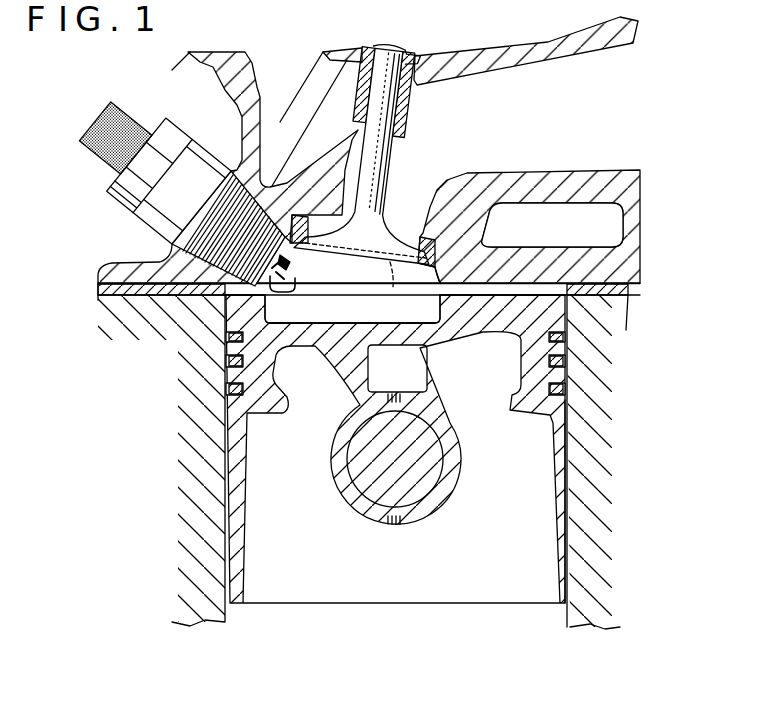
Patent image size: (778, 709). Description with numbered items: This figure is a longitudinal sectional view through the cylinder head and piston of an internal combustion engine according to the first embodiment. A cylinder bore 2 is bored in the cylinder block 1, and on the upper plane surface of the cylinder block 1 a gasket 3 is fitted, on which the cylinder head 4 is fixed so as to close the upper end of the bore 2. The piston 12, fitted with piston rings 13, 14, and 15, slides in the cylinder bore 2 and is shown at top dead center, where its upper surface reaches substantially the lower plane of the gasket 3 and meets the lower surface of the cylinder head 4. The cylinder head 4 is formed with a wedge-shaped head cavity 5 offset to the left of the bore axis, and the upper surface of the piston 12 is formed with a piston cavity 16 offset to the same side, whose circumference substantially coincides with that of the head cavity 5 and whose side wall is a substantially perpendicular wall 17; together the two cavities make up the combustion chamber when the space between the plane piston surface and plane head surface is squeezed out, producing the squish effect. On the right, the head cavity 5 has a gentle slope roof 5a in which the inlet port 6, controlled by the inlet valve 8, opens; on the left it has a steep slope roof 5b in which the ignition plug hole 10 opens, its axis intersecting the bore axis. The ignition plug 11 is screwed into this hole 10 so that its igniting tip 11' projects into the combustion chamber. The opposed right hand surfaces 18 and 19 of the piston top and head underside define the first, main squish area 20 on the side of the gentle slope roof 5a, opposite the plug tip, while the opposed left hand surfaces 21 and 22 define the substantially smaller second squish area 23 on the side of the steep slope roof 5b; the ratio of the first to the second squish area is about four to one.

The cylinder block 1 is at (573, 437).
The cylinder bore 2 is at (565, 524).
The gasket 3 is at (612, 292).
The cylinder head 4 is at (550, 270).
The head cavity 5 is at (380, 270).
The gentle slope roof 5a is at (352, 307).
The steep slope roof 5b is at (317, 273).
The inlet port 6 is at (416, 244).
The inlet valve 8 is at (381, 186).
The ignition plug hole 10 is at (217, 238).
The ignition plug 11 is at (155, 173).
The igniting tip 11' is at (307, 268).
The piston 12 is at (563, 486).
The piston ring 13 is at (568, 340).
The piston ring 14 is at (567, 363).
The piston ring 15 is at (568, 390).
The piston cavity 16 is at (364, 320).
The perpendicular wall 17 is at (441, 303).
The upper surface of the piston (right hand part) 18 is at (507, 288).
The lower surface of the cylinder head (right hand part) 19 is at (534, 287).
The first squish area 20 is at (477, 290).
The upper surface of the piston (left hand part) 21 is at (252, 290).
The lower surface of the cylinder head (left hand part) 22 is at (237, 283).
The second squish area 23 is at (267, 298).